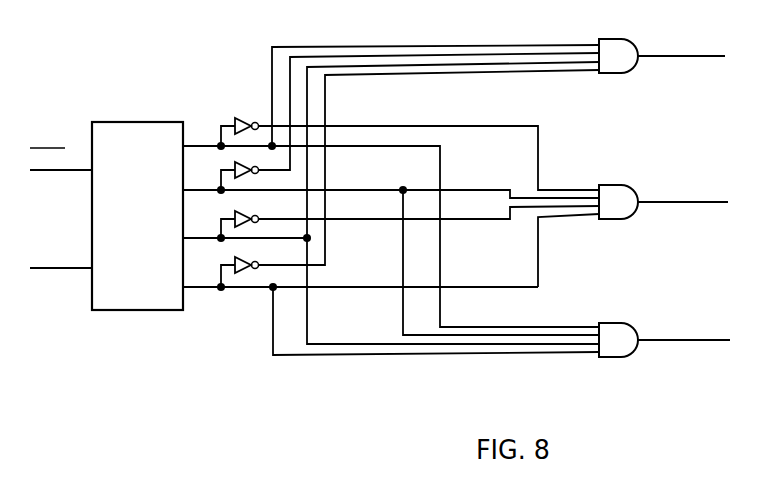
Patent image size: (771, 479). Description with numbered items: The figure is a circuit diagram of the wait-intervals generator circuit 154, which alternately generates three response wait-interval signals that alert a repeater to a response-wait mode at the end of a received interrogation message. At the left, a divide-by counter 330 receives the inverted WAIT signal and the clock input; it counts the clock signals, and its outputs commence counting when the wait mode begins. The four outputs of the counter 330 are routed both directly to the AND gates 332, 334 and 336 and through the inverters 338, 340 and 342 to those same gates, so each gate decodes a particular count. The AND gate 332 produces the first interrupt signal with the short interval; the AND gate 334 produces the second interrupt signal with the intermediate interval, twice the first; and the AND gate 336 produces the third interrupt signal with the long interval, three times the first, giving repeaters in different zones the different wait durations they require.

The wait-intervals generator circuit 154 is at (233, 403).
The divide-by counter 330 is at (137, 216).
The AND gate 332 is at (636, 44).
The AND gate 334 is at (243, 162).
The AND gate 336 is at (637, 325).
The inverter 338 is at (243, 118).
The inverter 340 is at (243, 211).
The inverter 342 is at (243, 257).